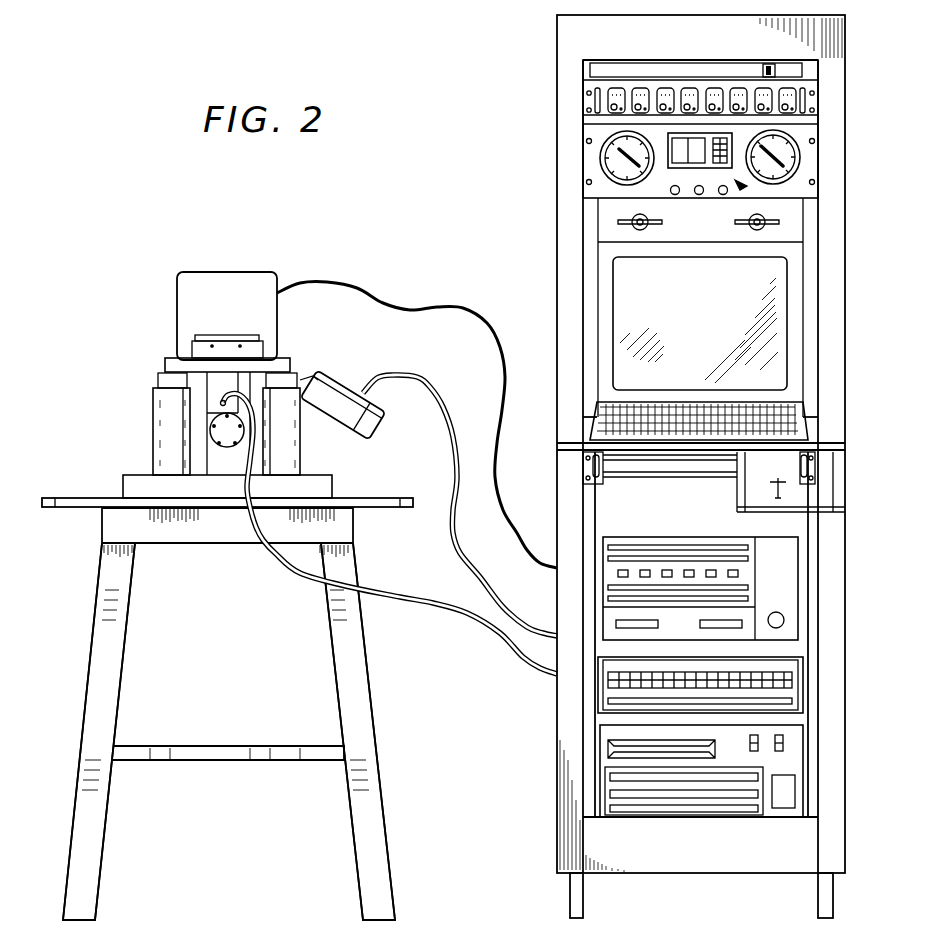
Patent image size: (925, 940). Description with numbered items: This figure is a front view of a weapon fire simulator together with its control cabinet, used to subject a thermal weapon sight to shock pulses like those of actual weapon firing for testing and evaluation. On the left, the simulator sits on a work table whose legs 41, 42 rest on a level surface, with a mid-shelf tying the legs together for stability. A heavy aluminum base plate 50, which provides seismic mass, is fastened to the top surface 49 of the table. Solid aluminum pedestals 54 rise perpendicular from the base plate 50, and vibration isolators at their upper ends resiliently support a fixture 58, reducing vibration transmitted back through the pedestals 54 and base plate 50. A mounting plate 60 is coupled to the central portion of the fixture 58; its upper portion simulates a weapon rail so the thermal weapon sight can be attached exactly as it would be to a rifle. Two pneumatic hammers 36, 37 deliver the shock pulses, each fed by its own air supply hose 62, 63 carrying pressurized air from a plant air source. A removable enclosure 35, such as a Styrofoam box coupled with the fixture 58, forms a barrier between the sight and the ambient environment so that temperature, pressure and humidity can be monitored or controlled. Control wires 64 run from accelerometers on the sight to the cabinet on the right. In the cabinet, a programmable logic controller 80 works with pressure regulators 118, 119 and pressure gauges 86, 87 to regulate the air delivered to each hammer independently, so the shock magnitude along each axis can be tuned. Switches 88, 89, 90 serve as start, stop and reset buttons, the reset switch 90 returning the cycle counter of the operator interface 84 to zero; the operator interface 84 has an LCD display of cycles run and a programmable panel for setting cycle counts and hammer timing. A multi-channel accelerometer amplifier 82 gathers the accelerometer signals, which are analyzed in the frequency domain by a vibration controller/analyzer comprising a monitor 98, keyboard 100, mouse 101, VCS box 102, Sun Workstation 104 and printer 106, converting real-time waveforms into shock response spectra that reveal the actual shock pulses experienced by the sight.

The removable enclosure 35 is at (220, 272).
The pneumatic hammer 36 is at (332, 379).
The pneumatic hammer 37 is at (228, 378).
The leg 41 is at (100, 885).
The leg 42 is at (395, 887).
The top surface 49 is at (73, 495).
The base plate 50 is at (137, 473).
The pedestal 54 is at (152, 412).
The fixture 58 is at (173, 357).
The mounting plate 60 is at (238, 333).
The air supply hose 62 is at (428, 377).
The air supply hose 63 is at (296, 568).
The control wires 64 is at (483, 322).
The programmable logic controller 80 is at (807, 172).
The multi-channel accelerometer amplifier 82 is at (813, 107).
The operator interface 84 is at (782, 188).
The pressure gauge 86 is at (598, 160).
The pressure gauge 87 is at (792, 137).
The switch 88 is at (675, 196).
The switch 89 is at (699, 184).
The reset switch 90 is at (724, 196).
The monitor 98 is at (725, 352).
The keyboard 100 is at (810, 427).
The mouse 101 is at (830, 520).
The VCS box 102 is at (783, 587).
The Sun Workstation 104 is at (795, 692).
The printer 106 is at (790, 762).
The pressure regulator 118 is at (645, 230).
The pressure regulator 119 is at (757, 230).